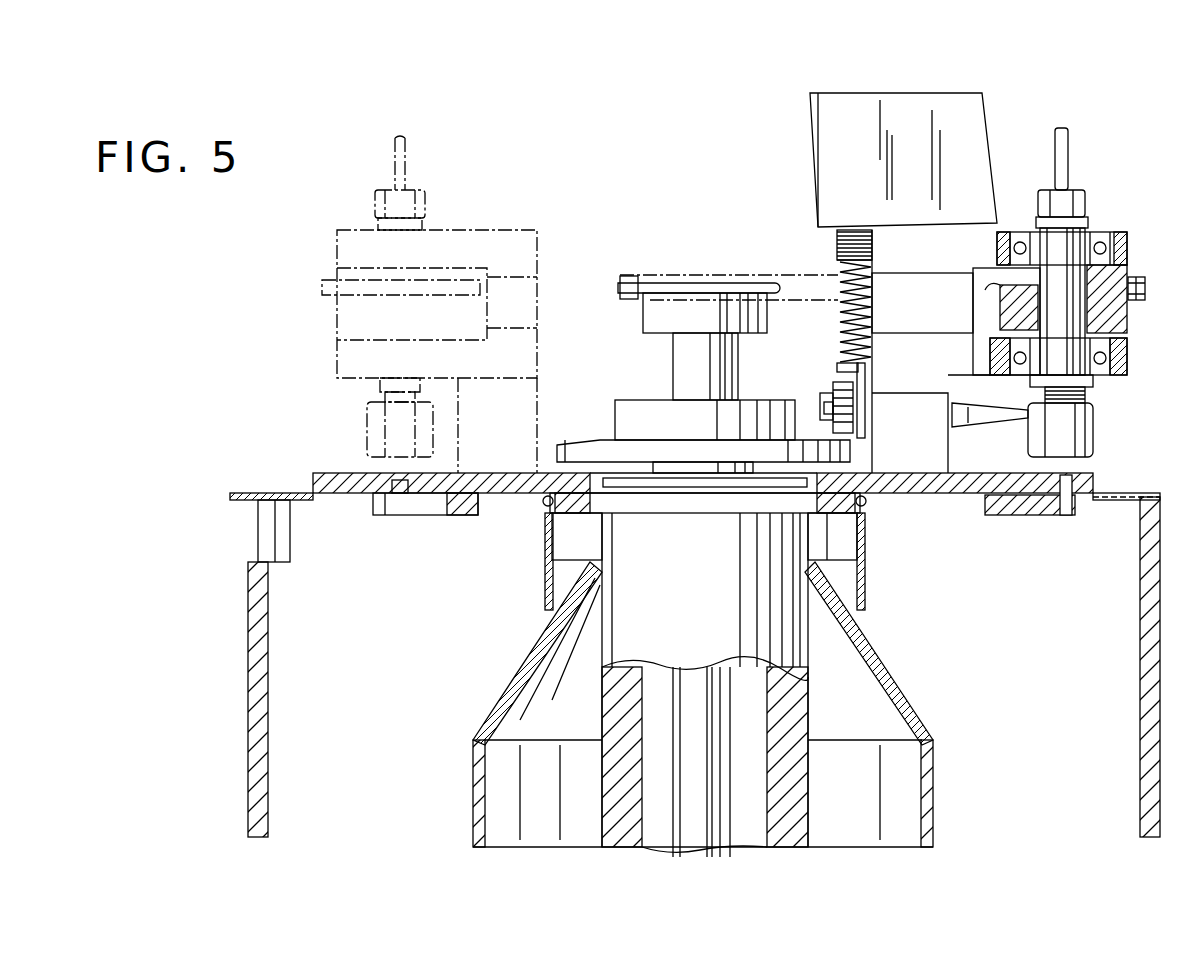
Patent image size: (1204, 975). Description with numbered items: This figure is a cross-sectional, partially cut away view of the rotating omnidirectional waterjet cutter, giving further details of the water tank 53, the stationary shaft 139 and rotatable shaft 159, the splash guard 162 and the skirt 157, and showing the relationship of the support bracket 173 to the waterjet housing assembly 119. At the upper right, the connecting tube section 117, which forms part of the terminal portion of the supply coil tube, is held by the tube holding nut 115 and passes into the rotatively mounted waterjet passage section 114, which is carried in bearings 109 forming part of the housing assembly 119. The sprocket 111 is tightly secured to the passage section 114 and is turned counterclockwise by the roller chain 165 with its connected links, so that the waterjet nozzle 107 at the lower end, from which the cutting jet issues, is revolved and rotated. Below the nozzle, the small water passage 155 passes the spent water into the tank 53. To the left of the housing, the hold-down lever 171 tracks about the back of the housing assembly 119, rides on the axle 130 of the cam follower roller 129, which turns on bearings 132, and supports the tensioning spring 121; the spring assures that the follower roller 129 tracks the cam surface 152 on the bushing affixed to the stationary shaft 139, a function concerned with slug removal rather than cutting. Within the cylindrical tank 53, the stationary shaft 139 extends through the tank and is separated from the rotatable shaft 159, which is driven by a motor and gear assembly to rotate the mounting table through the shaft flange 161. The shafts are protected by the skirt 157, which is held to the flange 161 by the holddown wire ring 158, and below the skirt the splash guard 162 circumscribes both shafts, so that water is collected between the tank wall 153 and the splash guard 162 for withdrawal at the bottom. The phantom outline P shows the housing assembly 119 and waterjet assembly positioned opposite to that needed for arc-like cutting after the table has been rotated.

The phantom position of housing assembly and waterjet assembly P is at (337, 232).
The water tank 53 is at (385, 797).
The waterjet nozzle 107 is at (1093, 435).
The bearings 109 is at (1127, 242).
The sprocket 111 is at (1127, 316).
The waterjet passage section 114 is at (1045, 280).
The tube holding nut 115 is at (1085, 208).
The connecting tube section 117 is at (1068, 148).
The waterjet housing assembly 119 is at (940, 309).
The tensioning spring 121 is at (838, 280).
The cam follower roller 129 is at (836, 392).
The axle of cam follower roller 130 is at (835, 410).
The bearings 132 is at (822, 402).
The stationary shaft 139 is at (725, 792).
The cam surface 152 is at (590, 444).
The tank wall 153 is at (266, 656).
The water passage 155 is at (1066, 505).
The skirt 157 is at (866, 566).
The holddown wire ring 158 is at (866, 505).
The rotatable shaft 159 is at (805, 822).
The shaft flange 161 is at (597, 512).
The splash guard 162 is at (532, 660).
The roller chain 165 is at (1145, 285).
The hold-down lever 171 is at (862, 382).
The support bracket 173 is at (872, 180).